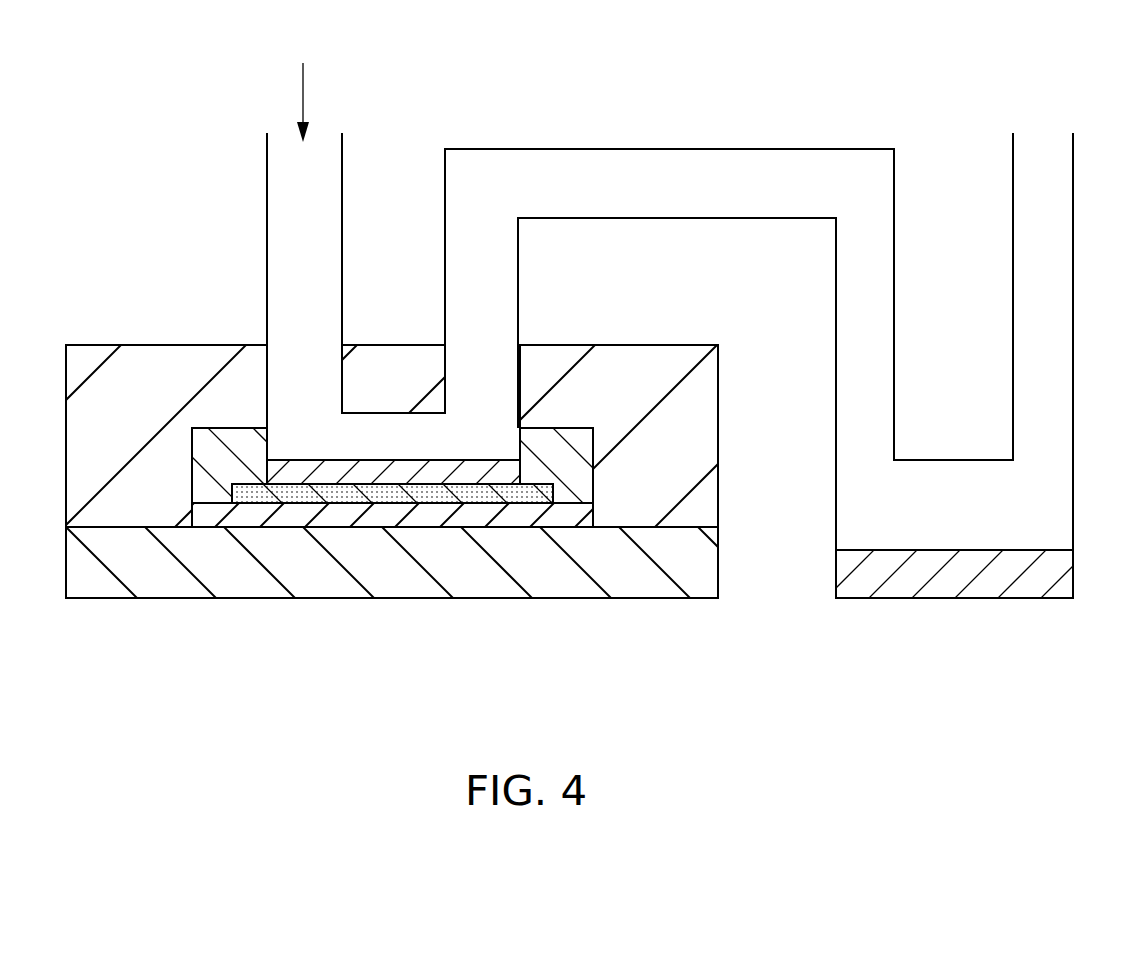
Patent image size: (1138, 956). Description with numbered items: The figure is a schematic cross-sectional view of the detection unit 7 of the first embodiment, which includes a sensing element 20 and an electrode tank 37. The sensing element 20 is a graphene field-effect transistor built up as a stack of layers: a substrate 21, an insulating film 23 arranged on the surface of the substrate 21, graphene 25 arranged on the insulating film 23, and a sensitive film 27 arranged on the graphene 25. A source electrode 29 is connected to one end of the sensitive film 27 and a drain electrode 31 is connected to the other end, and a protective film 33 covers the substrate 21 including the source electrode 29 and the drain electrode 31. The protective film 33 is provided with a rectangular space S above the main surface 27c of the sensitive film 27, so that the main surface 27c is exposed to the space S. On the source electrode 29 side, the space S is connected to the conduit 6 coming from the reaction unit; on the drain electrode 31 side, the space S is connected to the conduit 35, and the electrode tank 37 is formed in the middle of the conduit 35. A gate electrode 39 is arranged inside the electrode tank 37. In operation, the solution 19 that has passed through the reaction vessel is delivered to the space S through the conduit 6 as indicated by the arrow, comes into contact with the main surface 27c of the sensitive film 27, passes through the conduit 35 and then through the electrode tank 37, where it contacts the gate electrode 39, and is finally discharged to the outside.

The conduit 6 is at (267, 205).
The detection unit 7 is at (588, 88).
The solution 19 is at (306, 92).
The sensing element 20 is at (586, 636).
The substrate 21 is at (178, 583).
The insulating film 23 is at (413, 517).
The graphene 25 is at (362, 497).
The sensitive film 27 is at (309, 470).
The main surface 27c is at (478, 460).
The source electrode 29 is at (228, 428).
The drain electrode 31 is at (558, 428).
The protective film 33 is at (708, 442).
The conduit 35 is at (689, 149).
The electrode tank 37 is at (835, 510).
The gate electrode 39 is at (986, 580).
The space S is at (405, 430).